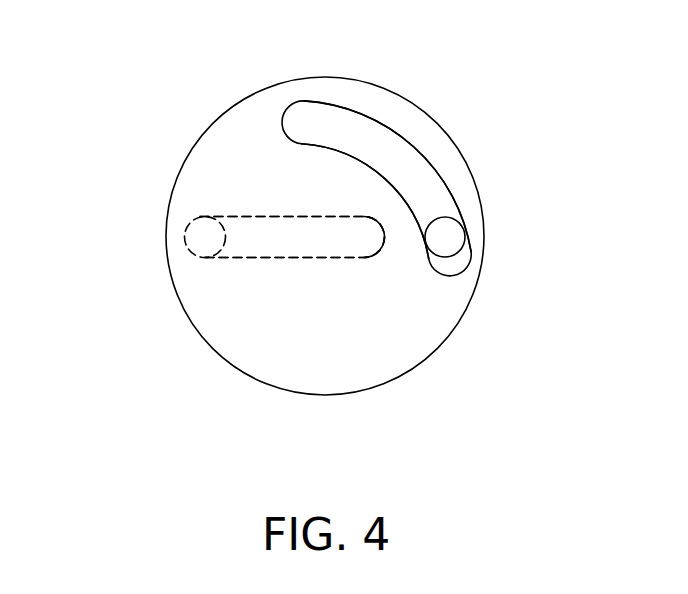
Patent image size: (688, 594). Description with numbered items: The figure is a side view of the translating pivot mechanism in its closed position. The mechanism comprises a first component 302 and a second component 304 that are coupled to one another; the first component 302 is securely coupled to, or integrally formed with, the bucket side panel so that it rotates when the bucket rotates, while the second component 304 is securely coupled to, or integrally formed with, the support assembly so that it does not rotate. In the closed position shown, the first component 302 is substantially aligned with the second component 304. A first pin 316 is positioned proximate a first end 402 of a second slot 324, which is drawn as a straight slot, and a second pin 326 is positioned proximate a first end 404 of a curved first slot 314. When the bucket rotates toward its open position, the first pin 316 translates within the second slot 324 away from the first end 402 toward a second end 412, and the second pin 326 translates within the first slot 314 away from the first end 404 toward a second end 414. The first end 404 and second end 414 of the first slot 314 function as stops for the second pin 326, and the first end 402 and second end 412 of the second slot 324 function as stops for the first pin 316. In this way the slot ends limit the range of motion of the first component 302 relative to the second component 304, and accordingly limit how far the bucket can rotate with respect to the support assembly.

The first component 302 is at (222, 146).
The second component 304 is at (318, 128).
The first slot 314 is at (372, 150).
The first pin 316 is at (203, 240).
The second slot 324 is at (291, 236).
The second pin 326 is at (445, 237).
The first end of second slot 402 is at (187, 228).
The first end of first slot 404 is at (456, 278).
The second end of second slot 412 is at (380, 252).
The second end of first slot 414 is at (285, 122).